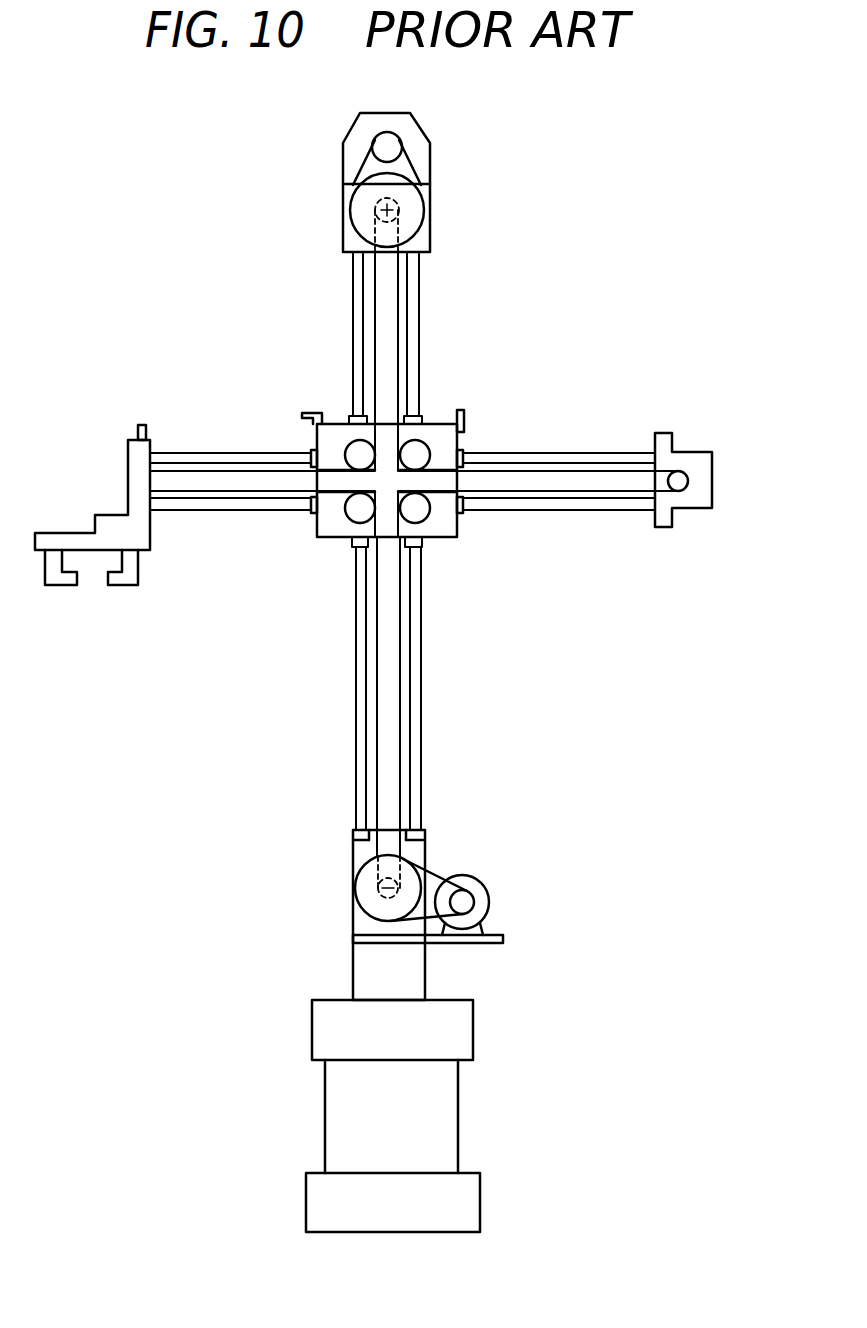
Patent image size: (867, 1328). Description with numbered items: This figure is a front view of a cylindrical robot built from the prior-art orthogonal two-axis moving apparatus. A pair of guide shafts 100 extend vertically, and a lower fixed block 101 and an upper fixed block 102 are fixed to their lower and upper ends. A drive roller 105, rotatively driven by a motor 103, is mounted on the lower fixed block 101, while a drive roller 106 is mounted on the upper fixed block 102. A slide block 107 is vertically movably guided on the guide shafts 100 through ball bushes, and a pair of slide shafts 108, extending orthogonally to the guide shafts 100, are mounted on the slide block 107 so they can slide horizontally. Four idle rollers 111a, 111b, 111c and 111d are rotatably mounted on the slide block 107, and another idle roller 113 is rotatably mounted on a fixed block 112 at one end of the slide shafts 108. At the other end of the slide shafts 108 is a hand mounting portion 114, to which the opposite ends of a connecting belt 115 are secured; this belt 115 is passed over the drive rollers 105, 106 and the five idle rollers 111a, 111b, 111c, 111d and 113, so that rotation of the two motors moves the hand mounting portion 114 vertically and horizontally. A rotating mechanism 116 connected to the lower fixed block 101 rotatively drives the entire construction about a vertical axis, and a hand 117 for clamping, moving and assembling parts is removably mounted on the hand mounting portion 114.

The guide shafts 100 is at (356, 644).
The lower fixed block 101 is at (362, 930).
The upper fixed block 102 is at (422, 146).
The motor 103 is at (490, 902).
The drive roller 105 is at (360, 888).
The drive roller 106 is at (372, 210).
The slide block 107 is at (442, 420).
The slide shafts 108 is at (597, 452).
The idle roller 111a is at (349, 444).
The idle roller 111b is at (422, 451).
The idle roller 111c is at (352, 515).
The idle roller 111d is at (423, 515).
The fixed block 112 is at (686, 452).
The idle roller 113 is at (697, 487).
The hand mounting portion 114 is at (140, 522).
The connecting belt 115 is at (613, 497).
The rotating mechanism 116 is at (478, 1010).
The hand 117 is at (103, 586).